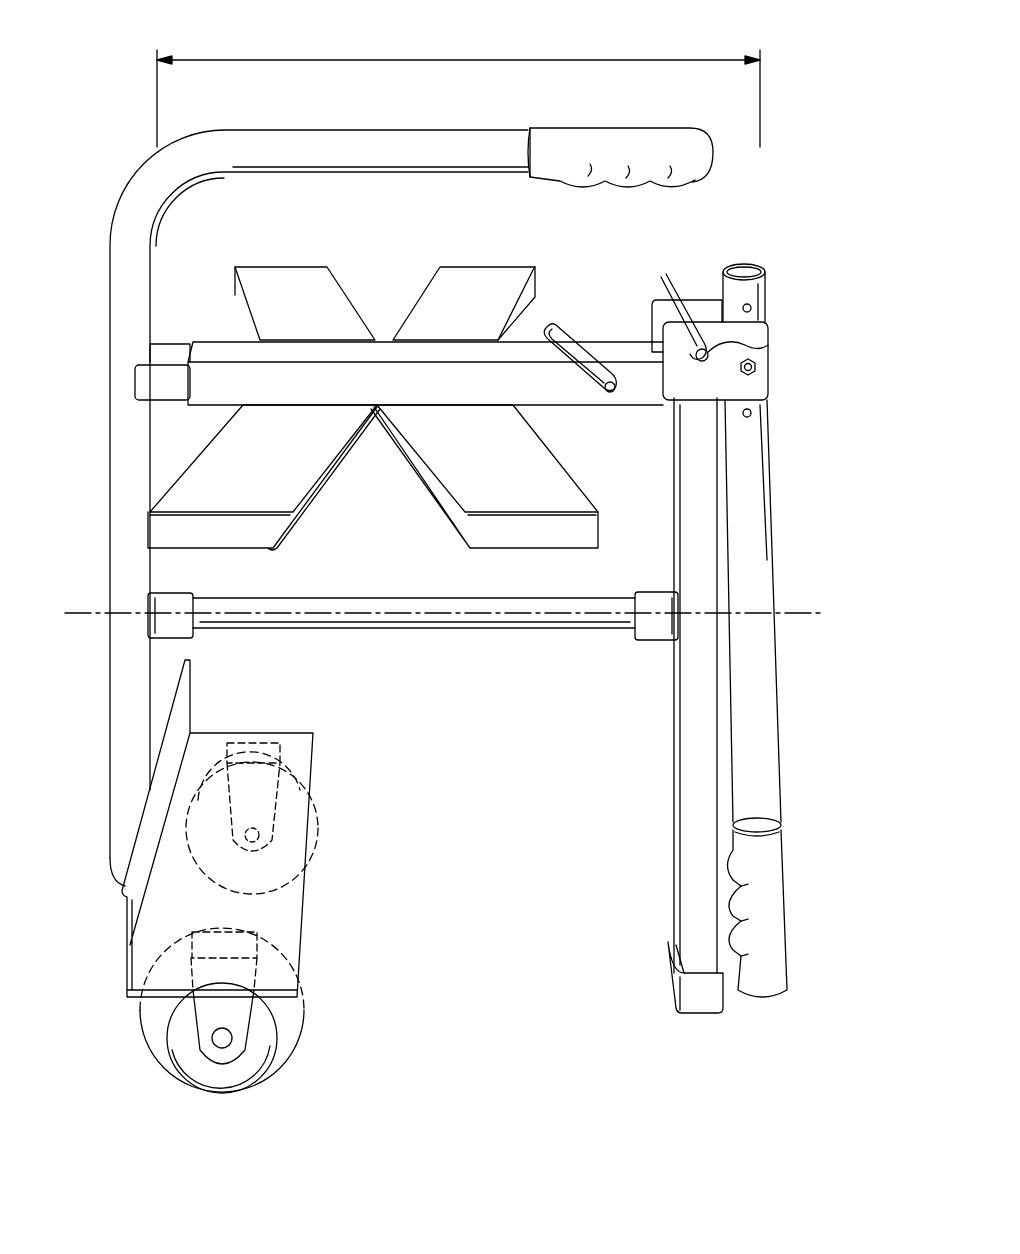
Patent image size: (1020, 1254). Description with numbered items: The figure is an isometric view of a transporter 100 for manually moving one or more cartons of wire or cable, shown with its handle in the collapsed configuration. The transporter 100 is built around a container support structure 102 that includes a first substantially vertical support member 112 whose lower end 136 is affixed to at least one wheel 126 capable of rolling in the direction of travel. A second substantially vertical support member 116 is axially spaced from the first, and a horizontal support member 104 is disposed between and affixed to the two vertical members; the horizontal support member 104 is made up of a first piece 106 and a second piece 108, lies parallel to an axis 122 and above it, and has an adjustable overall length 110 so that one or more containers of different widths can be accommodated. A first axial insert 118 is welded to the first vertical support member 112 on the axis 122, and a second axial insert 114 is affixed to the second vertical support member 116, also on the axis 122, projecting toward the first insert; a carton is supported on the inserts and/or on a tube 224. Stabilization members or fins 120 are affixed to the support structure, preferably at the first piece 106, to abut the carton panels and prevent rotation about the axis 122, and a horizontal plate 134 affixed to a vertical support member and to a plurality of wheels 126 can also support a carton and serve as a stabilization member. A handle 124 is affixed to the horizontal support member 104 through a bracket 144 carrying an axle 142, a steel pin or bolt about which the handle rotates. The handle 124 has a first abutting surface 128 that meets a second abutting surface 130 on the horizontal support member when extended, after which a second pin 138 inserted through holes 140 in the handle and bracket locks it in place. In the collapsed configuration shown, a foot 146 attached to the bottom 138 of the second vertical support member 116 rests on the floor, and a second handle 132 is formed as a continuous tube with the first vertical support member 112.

The transporter 100 is at (804, 204).
The container support structure 102 is at (362, 483).
The horizontal support member 104 is at (383, 308).
The first piece of the horizontal support member 106 is at (626, 369).
The second piece of the horizontal support member 108 is at (170, 352).
The overall length 110 is at (524, 56).
The first substantially vertical support member 112 is at (112, 462).
The second axial insert 114 is at (650, 595).
The second substantially vertical support member 116 is at (672, 694).
The first axial insert 118 is at (190, 592).
The stabilization member 120 is at (243, 470).
The axis 122 is at (82, 618).
The handle 124 is at (758, 564).
The wheel 126 is at (315, 848).
The first abutting surface 128 is at (722, 280).
The second abutting surface 130 is at (662, 350).
The second handle 132 is at (378, 130).
The horizontal plate 134 is at (285, 928).
The lower end 136 is at (610, 394).
The second pin 138 is at (673, 270).
The holes 140 is at (752, 308).
The axle 142 is at (760, 370).
The bracket 144 is at (762, 392).
The foot 146 is at (705, 1005).
The tube 224 is at (432, 630).